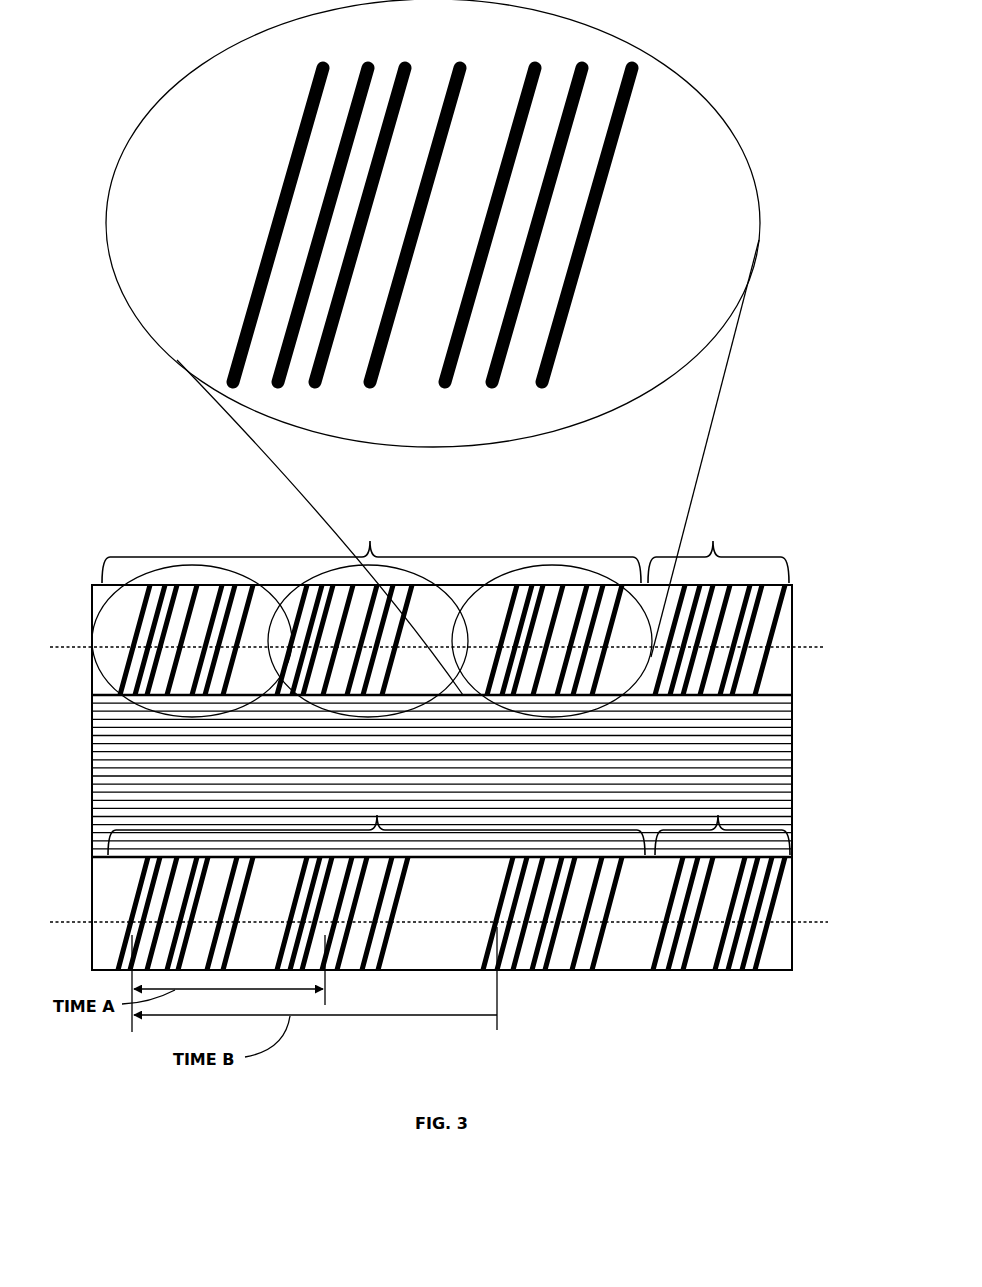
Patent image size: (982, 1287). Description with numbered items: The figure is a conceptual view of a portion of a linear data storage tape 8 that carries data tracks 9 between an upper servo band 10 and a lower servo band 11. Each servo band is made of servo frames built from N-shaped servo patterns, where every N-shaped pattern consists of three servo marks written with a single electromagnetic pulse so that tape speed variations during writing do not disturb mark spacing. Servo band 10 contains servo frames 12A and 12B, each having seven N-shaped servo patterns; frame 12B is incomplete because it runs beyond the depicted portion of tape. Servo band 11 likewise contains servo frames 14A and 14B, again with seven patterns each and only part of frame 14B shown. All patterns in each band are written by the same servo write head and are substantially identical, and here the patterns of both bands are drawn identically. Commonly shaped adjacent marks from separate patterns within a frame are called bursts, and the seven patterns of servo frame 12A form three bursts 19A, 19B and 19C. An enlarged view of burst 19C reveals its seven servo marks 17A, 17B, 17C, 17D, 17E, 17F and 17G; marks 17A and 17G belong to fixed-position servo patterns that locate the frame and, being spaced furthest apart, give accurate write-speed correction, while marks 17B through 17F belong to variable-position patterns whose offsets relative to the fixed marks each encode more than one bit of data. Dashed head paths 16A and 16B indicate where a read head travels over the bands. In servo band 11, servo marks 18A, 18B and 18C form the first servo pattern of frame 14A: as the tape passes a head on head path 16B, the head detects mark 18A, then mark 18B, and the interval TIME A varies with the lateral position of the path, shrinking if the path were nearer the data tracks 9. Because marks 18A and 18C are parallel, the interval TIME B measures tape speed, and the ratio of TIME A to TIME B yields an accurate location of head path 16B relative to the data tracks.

The data storage tape 8 is at (121, 434).
The data tracks 9 is at (79, 771).
The servo band 10 is at (60, 596).
The servo band 11 is at (70, 884).
The servo frame 12A is at (371, 551).
The servo frame 12B is at (718, 555).
The servo frame 14A is at (376, 825).
The servo frame 14B is at (722, 825).
The head path 16A is at (823, 647).
The head path 16B is at (828, 922).
The servo mark 17A is at (323, 63).
The servo mark 17B is at (368, 63).
The servo mark 17C is at (405, 63).
The servo mark 17D is at (460, 63).
The servo mark 17E is at (535, 63).
The servo mark 17F is at (582, 63).
The servo mark 17G is at (632, 63).
The servo mark 18A is at (137, 892).
The servo mark 18B is at (313, 892).
The servo mark 18C is at (503, 892).
The burst 19A is at (173, 568).
The burst 19B is at (420, 582).
The burst 19C is at (131, 135).